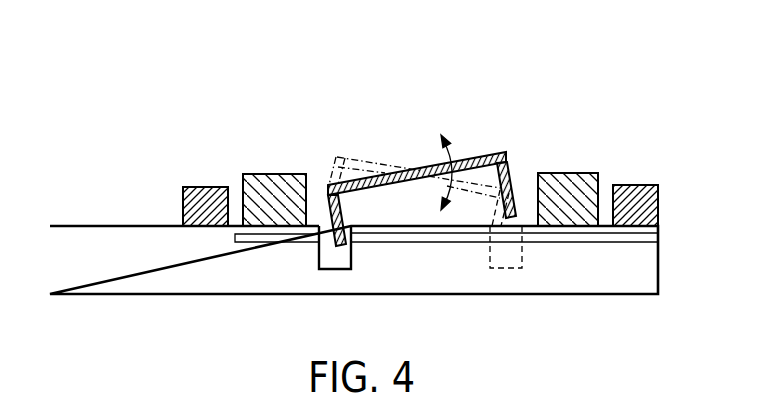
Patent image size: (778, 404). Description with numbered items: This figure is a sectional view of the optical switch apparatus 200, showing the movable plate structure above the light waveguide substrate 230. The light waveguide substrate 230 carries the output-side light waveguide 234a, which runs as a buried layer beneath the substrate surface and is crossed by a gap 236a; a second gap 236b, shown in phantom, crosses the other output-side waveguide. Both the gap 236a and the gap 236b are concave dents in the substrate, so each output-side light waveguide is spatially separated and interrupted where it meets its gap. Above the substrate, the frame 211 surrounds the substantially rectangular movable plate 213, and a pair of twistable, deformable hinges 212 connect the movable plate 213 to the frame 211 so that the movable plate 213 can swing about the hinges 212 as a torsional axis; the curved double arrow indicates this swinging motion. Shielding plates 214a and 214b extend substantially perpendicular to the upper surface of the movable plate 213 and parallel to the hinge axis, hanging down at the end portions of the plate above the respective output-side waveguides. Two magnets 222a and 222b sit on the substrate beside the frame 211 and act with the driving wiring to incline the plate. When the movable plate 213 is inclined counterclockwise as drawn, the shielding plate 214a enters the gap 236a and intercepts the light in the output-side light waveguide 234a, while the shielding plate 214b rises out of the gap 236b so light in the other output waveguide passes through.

The optical switch apparatus 200 is at (475, 82).
The frame 211 is at (575, 172).
The hinge 212 is at (415, 164).
The movable plate 213 is at (338, 161).
The shielding plate 214a is at (331, 208).
The shielding plate 214b is at (508, 183).
The magnet 222a is at (183, 187).
The magnet 222b is at (642, 185).
The light waveguide substrate 230 is at (102, 275).
The output-side light waveguide 234a is at (410, 242).
The gap 236a is at (337, 258).
The gap 236b is at (507, 262).